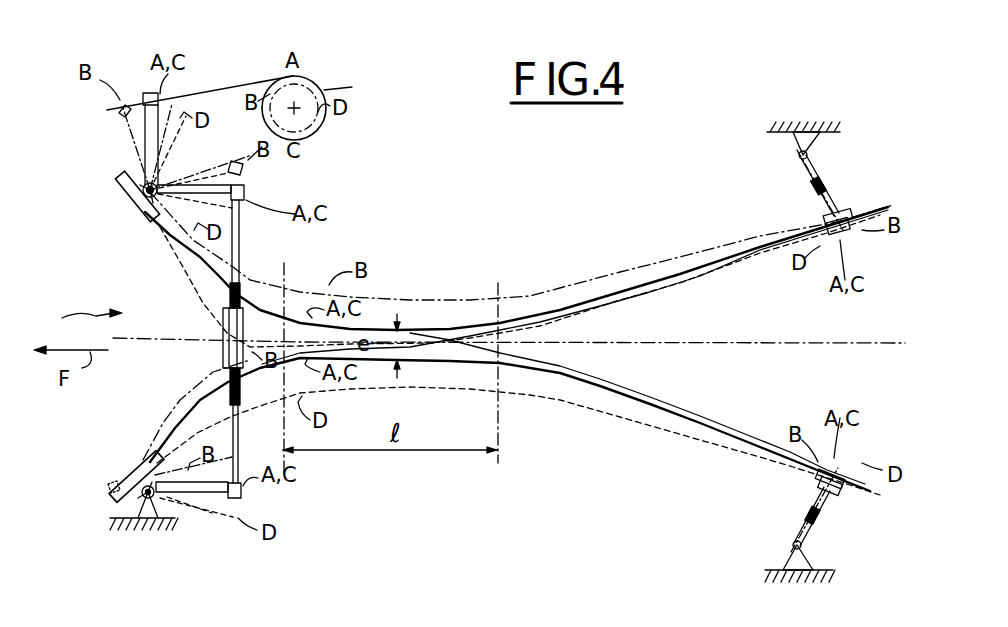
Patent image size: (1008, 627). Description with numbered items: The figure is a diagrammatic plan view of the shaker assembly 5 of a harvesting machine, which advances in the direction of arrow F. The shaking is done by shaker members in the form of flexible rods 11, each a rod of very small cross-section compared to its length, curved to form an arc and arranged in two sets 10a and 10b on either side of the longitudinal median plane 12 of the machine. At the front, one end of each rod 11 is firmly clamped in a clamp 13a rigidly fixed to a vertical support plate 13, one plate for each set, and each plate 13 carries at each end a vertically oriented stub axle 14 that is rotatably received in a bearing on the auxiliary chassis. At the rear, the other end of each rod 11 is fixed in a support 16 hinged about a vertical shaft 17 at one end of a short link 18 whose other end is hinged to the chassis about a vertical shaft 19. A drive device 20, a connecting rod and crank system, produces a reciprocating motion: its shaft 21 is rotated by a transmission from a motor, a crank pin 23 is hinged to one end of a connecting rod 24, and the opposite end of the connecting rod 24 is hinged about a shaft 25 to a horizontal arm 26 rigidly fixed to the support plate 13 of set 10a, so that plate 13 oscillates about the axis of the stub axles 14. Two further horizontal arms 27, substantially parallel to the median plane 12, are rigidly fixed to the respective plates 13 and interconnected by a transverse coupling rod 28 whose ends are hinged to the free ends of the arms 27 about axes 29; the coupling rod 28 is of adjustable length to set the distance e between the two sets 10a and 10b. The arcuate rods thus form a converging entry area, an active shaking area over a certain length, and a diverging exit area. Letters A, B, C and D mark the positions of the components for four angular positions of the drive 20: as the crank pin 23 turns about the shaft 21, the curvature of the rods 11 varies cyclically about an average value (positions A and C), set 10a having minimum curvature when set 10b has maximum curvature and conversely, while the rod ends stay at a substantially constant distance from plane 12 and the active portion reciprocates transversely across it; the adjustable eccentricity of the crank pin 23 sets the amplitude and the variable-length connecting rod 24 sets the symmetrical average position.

The shaker assembly 5 is at (81, 313).
The first set of rods 10a is at (499, 273).
The second set of rods 10b is at (511, 428).
The shaker member rod 11 is at (537, 313).
The longitudinal median plane 12 is at (818, 345).
The vertical support plate 13 is at (126, 172).
The clamp 13a is at (132, 212).
The stub axle 14 is at (162, 182).
The support 16 is at (853, 245).
The vertical shaft 17 is at (847, 210).
The short link 18 is at (815, 185).
The vertical shaft 19 is at (797, 153).
The drive device 20 is at (217, 82).
The shaft 21 is at (350, 88).
The crank pin 23 is at (318, 76).
The connecting rod 24 is at (217, 98).
The shaft 25 is at (150, 93).
The horizontal arm 26 is at (145, 132).
The horizontal arm 27 is at (250, 170).
The coupling rod 28 is at (241, 250).
The hinge axis 29 is at (250, 192).